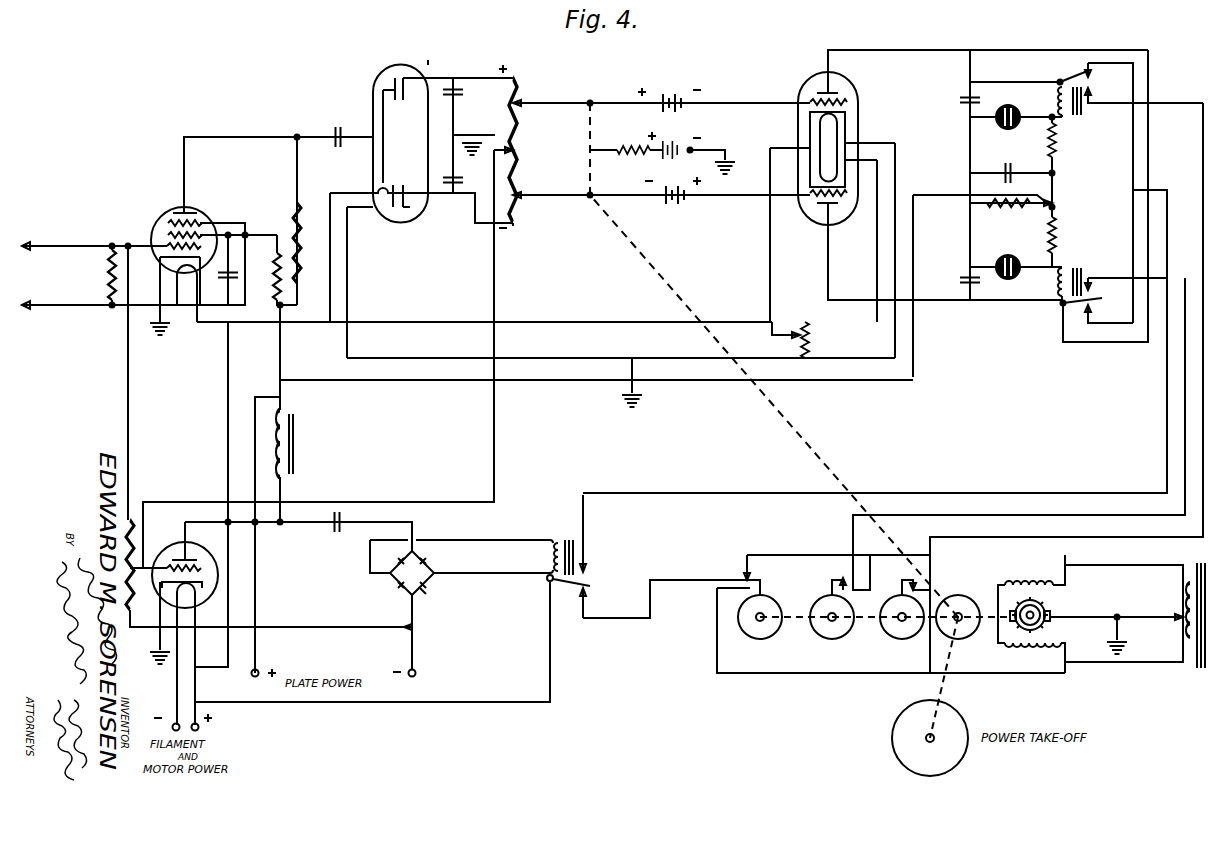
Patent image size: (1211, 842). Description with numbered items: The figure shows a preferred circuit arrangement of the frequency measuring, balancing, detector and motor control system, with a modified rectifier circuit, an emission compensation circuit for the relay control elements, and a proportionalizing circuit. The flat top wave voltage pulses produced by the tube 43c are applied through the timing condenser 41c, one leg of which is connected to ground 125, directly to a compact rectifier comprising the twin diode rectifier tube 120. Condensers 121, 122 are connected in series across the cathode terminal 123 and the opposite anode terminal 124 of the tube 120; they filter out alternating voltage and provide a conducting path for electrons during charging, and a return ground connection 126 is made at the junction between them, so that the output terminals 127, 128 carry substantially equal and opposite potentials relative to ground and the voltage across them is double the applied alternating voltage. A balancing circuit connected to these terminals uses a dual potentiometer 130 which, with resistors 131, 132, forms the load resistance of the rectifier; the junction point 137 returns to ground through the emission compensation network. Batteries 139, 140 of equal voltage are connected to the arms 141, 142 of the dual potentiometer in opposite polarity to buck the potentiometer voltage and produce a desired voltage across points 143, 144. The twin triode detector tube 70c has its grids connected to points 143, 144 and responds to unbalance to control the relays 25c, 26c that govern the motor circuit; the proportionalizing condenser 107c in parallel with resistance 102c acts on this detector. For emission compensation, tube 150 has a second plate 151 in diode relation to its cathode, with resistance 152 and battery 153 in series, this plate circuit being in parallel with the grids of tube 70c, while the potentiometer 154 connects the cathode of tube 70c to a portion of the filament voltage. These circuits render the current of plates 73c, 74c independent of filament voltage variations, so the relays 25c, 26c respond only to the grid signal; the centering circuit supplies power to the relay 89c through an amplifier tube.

The timing condenser 41c is at (334, 130).
The tube 43c is at (199, 213).
The ground 125 is at (165, 326).
The twin diode rectifier tube 120 is at (378, 214).
The anode terminal 124 is at (406, 210).
The cathode terminal 123 is at (444, 54).
The condenser 121 is at (456, 90).
The condenser 122 is at (450, 197).
The return ground connection 126 is at (474, 130).
The output terminal 127 is at (523, 143).
The output terminal 128 is at (513, 226).
The dual potentiometer 130 is at (523, 188).
The resistor 131 is at (508, 145).
The resistor 132 is at (507, 162).
The junction point 137 is at (507, 147).
The potentiometer arm 141 is at (533, 103).
The potentiometer arm 142 is at (556, 199).
The battery 139 is at (668, 92).
The point 143 is at (700, 106).
The point 144 is at (700, 197).
The battery 140 is at (678, 212).
The resistance 152 is at (627, 146).
The battery 153 is at (660, 160).
The plate 74c is at (835, 97).
The twin triode detector tube 70c is at (865, 128).
The plate 73c is at (828, 213).
The condenser 107c is at (1004, 165).
The resistance 102c is at (1020, 214).
The relay 25c is at (1074, 118).
The relay 26c is at (1082, 272).
The variable resistor or potentiometer 154 is at (810, 340).
The tube 150 is at (168, 546).
The second plate 151 is at (152, 604).
The relay 89c is at (560, 540).